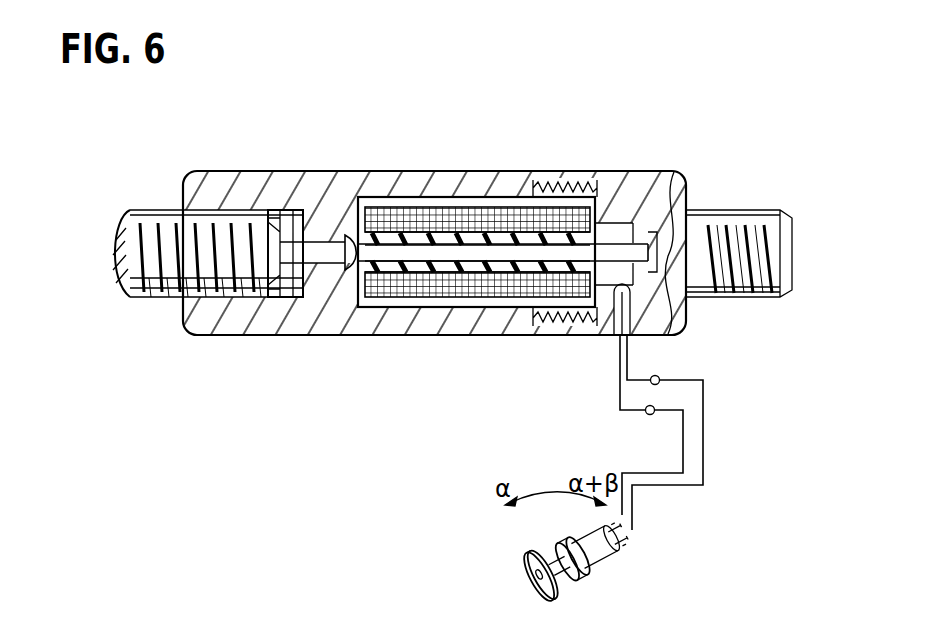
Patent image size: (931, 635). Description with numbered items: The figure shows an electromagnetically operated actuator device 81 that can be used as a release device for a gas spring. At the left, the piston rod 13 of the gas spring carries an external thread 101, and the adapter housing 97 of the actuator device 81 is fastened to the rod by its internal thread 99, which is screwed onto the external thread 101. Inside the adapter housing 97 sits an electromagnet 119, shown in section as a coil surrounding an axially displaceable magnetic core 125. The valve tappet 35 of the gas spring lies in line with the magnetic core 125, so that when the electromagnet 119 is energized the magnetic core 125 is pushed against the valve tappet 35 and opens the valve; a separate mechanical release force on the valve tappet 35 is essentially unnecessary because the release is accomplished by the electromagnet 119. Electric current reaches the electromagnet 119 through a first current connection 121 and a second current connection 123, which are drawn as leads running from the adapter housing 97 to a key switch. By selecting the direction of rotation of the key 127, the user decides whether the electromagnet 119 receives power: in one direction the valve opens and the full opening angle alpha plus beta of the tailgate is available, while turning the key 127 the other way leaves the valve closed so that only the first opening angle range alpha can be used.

The piston rod 13 is at (135, 238).
The external thread 101 is at (160, 208).
The adapter housing 97 is at (317, 192).
The magnetic core 125 is at (412, 248).
The electromagnet 119 is at (460, 284).
The internal thread 99 is at (288, 298).
The valve tappet 35 is at (319, 258).
The actuator device 81 is at (377, 480).
The second current connection 123 is at (665, 373).
The first current connection 121 is at (646, 418).
The key 127 is at (597, 563).